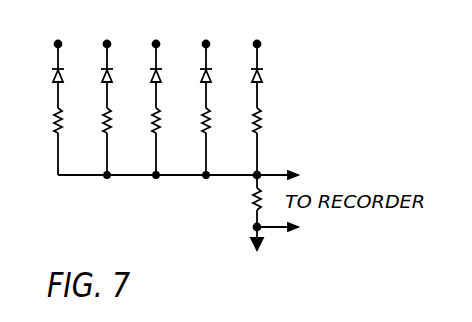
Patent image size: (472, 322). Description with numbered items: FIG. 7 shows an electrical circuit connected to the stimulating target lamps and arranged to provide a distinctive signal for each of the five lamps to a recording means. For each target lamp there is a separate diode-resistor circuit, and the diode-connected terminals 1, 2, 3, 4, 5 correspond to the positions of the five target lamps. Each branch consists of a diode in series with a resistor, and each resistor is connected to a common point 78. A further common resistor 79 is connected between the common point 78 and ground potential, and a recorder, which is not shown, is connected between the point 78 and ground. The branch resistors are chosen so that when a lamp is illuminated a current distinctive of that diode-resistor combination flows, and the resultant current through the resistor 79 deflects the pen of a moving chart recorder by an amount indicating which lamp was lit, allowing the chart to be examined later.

The diode-connected terminal 1 is at (58, 97).
The diode-connected terminal 2 is at (107, 99).
The diode-connected terminal 3 is at (156, 99).
The diode-connected terminal 4 is at (206, 99).
The diode-connected terminal 5 is at (257, 97).
The common point 78 is at (260, 173).
The common resistor 79 is at (254, 208).